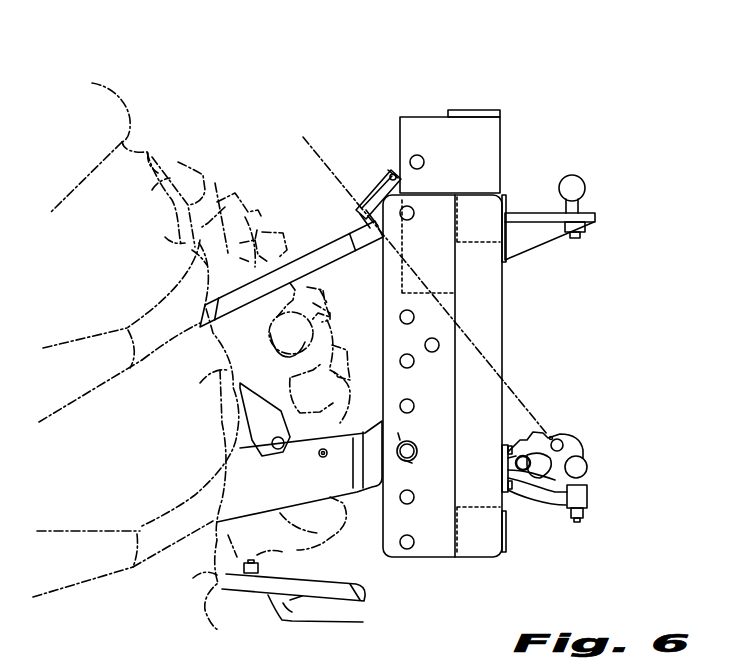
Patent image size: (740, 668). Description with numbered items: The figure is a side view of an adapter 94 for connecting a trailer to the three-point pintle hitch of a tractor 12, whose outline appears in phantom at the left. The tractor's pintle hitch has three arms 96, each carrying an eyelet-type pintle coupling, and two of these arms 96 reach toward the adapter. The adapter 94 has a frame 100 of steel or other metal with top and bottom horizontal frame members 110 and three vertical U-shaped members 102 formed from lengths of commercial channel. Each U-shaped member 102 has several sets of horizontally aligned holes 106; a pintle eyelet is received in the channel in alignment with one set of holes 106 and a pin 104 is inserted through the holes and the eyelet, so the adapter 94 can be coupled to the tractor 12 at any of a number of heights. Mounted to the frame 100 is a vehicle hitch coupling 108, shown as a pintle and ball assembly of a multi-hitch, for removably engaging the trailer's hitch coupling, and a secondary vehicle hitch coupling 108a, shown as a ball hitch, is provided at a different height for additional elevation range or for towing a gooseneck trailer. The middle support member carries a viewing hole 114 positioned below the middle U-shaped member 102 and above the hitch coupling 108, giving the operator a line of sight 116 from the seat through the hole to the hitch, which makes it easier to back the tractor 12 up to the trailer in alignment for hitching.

The tractor 12 is at (165, 100).
The adapter 94 is at (518, 90).
The arms 96 is at (313, 267).
The frame 100 is at (503, 143).
The vertical U-shaped members 102 is at (420, 115).
The pins 104 is at (420, 456).
The horizontally aligned holes 106 is at (411, 158).
The vehicle hitch coupling 108 is at (603, 462).
The secondary vehicle hitch coupling 108a is at (592, 193).
The horizontal frame members 110 is at (483, 213).
The viewing hole 114 is at (503, 318).
The line of sight 116 is at (517, 404).